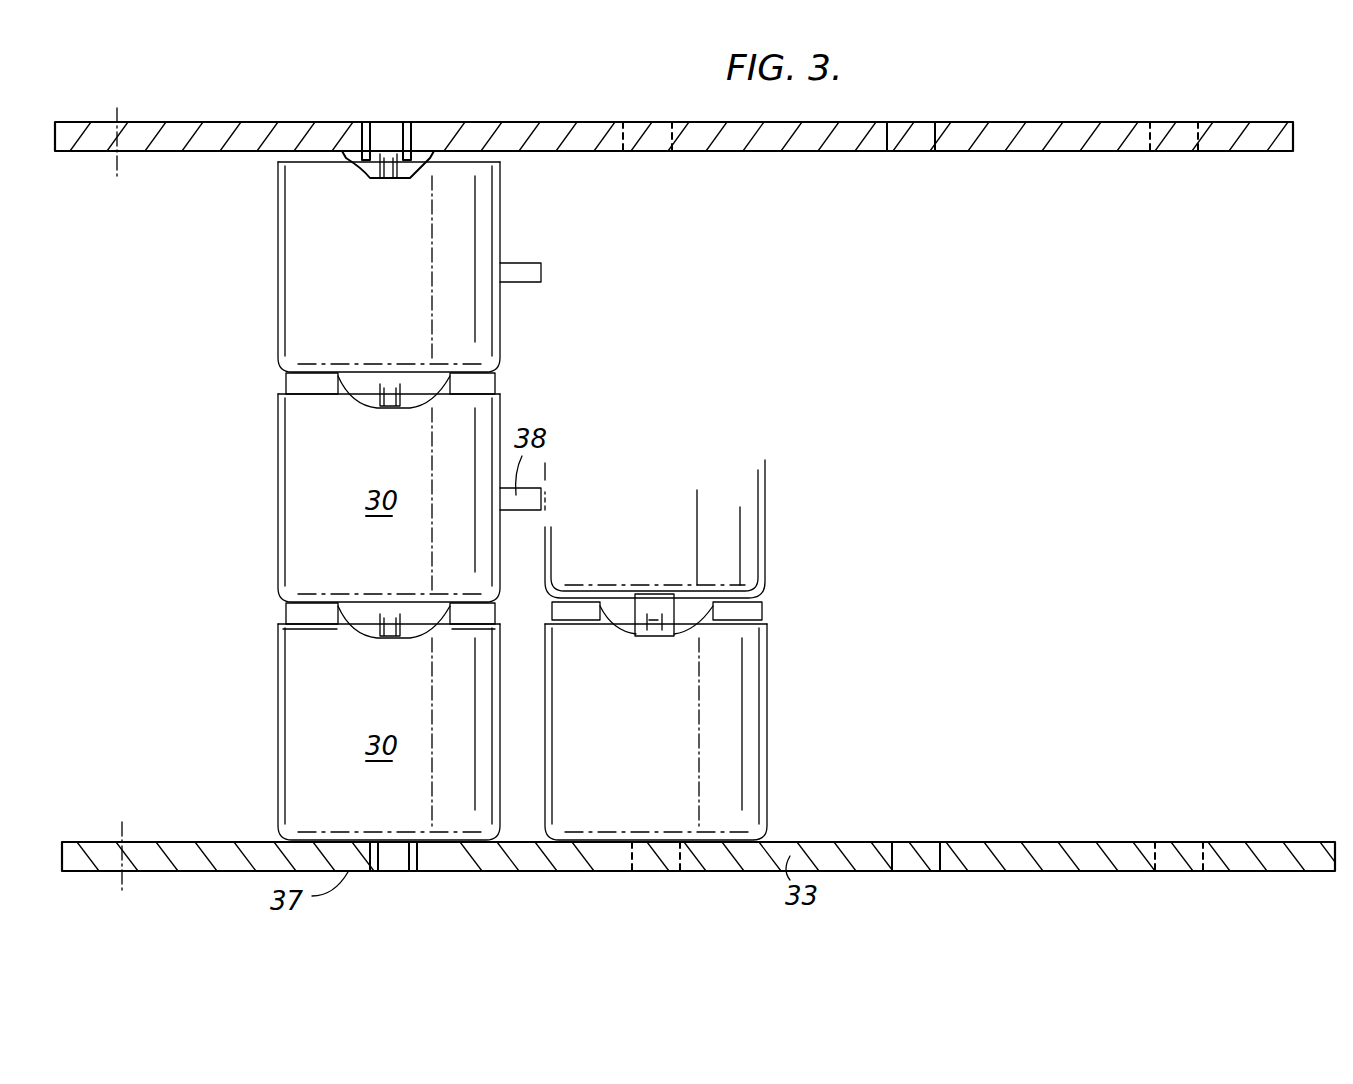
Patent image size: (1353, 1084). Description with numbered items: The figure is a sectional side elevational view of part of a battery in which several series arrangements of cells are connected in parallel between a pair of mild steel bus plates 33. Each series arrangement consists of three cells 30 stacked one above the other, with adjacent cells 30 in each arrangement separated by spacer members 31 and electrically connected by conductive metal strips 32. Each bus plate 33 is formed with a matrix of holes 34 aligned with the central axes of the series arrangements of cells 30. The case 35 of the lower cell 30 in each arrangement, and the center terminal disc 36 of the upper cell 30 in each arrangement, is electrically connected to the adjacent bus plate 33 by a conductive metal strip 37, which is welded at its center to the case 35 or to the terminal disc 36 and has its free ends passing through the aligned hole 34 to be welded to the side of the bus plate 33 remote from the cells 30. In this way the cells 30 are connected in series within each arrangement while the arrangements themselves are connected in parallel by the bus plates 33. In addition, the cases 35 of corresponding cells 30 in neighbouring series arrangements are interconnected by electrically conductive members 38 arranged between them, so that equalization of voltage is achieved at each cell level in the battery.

The cell 30 is at (392, 296).
The spacer member 31 is at (280, 628).
The conductive metal strip 32 is at (286, 604).
The bus plate 33 is at (1024, 136).
The hole 34 is at (912, 854).
The case 35 is at (278, 746).
The center terminal disc 36 is at (401, 182).
The conductive metal strip 37 is at (358, 122).
The electrically conductive member 38 is at (516, 275).